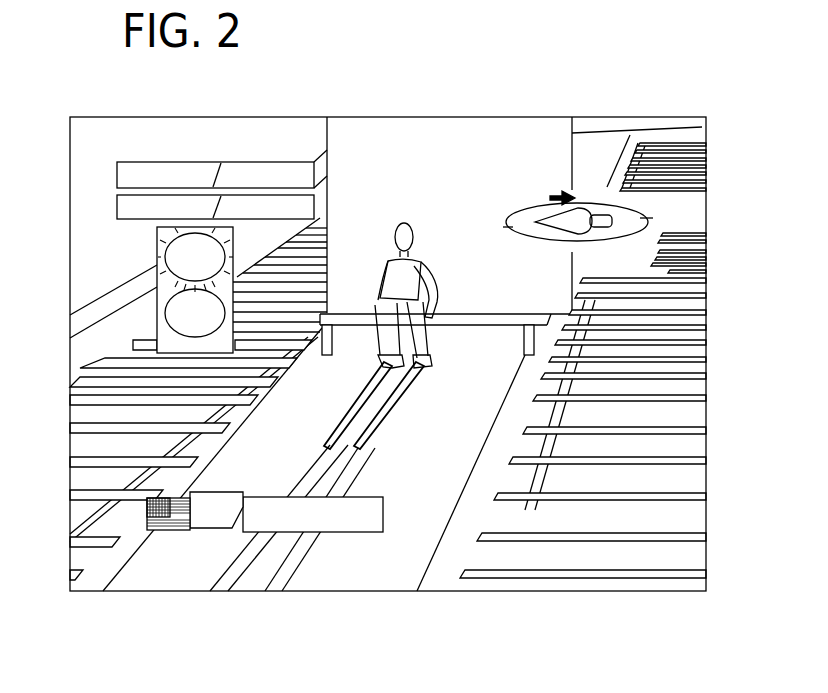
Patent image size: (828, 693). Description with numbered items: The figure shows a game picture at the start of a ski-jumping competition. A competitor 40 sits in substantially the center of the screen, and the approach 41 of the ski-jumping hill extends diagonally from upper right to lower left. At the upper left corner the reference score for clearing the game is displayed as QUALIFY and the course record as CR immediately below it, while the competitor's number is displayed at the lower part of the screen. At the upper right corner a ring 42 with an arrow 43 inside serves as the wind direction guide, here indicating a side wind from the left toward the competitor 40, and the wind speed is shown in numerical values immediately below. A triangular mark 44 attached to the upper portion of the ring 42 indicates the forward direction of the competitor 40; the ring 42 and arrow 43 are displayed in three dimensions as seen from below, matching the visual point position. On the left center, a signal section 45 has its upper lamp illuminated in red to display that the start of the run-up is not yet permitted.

The competitor 40 is at (433, 257).
The approach 41 is at (372, 582).
The ring 42 is at (650, 204).
The arrow 43 is at (612, 234).
The triangular mark 44 is at (560, 196).
The signal section 45 is at (157, 242).